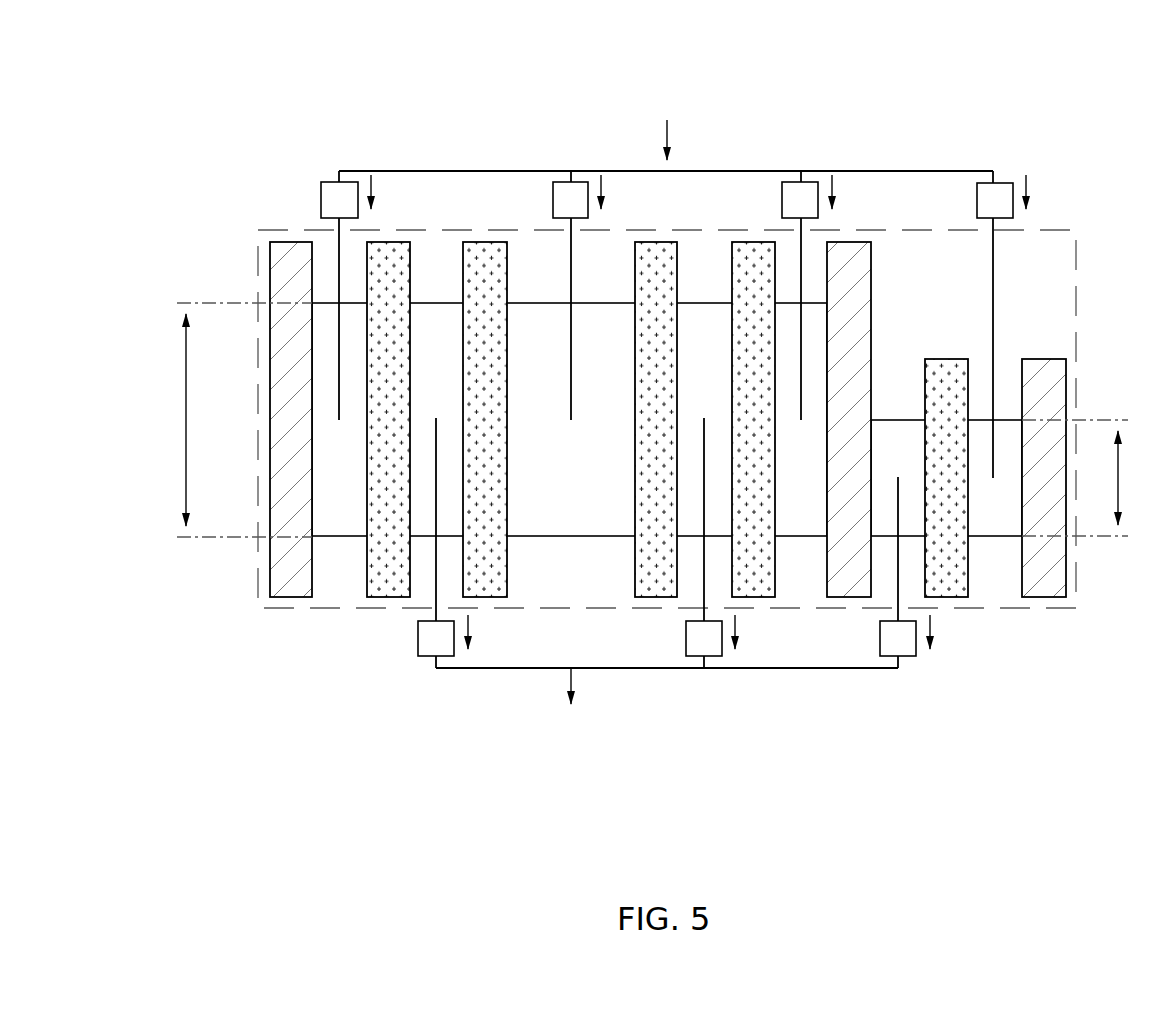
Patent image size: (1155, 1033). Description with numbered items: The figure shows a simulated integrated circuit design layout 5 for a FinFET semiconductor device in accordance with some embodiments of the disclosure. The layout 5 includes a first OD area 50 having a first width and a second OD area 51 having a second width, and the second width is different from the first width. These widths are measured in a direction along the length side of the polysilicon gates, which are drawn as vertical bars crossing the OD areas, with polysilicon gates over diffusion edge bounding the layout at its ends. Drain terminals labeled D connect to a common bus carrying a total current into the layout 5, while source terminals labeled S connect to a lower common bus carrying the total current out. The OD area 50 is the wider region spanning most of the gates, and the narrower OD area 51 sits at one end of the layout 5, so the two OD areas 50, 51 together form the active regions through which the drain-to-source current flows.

The simulated integrated circuit design layout 5 is at (245, 94).
The OD area 50 is at (568, 517).
The OD area 51 is at (995, 517).